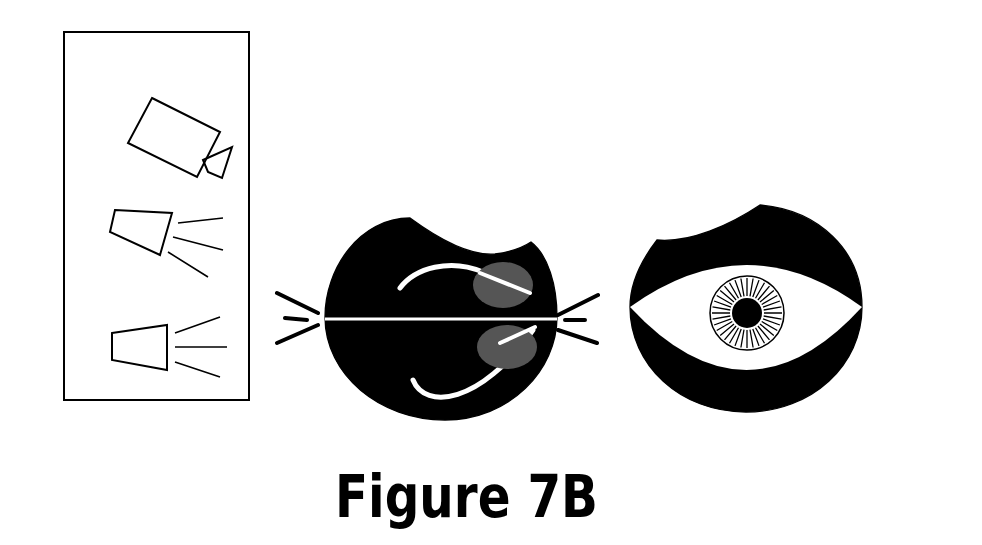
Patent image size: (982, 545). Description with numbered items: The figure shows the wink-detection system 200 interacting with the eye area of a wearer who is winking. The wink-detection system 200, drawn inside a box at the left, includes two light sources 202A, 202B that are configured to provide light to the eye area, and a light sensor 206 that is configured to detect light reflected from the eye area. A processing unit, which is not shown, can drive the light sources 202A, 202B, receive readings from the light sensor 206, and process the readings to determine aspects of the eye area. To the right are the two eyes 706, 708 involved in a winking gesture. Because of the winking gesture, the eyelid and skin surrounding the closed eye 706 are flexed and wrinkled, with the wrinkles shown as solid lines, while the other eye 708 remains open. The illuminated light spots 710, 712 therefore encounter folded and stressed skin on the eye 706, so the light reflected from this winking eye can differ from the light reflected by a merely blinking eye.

The wink-detection system 200 is at (108, 32).
The light sensor 206 is at (158, 98).
The light source 202A is at (160, 210).
The light source 202B is at (155, 323).
The winking eye 706 is at (438, 248).
The winking eye 708 is at (729, 148).
The light spot 710 is at (523, 257).
The light spot 712 is at (525, 364).